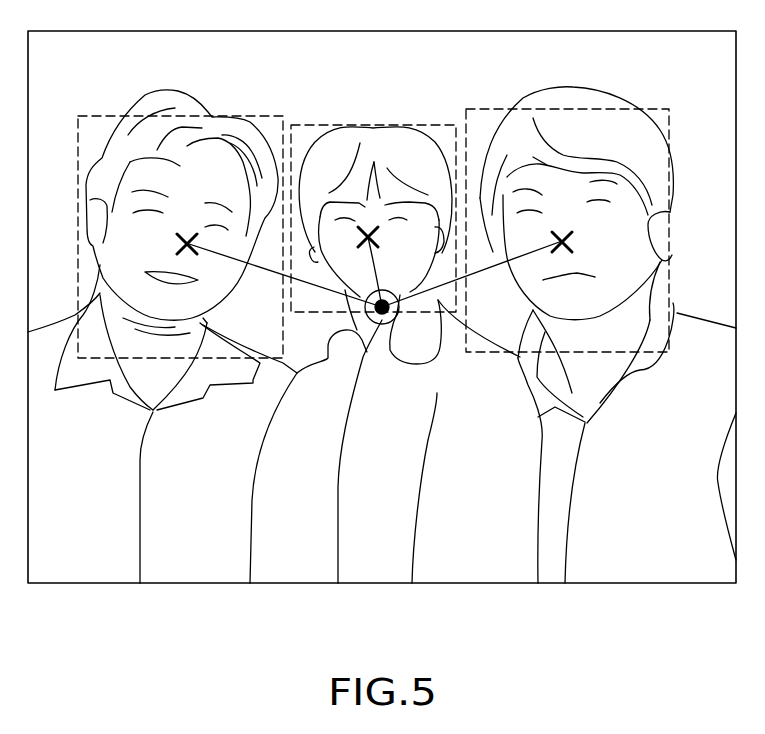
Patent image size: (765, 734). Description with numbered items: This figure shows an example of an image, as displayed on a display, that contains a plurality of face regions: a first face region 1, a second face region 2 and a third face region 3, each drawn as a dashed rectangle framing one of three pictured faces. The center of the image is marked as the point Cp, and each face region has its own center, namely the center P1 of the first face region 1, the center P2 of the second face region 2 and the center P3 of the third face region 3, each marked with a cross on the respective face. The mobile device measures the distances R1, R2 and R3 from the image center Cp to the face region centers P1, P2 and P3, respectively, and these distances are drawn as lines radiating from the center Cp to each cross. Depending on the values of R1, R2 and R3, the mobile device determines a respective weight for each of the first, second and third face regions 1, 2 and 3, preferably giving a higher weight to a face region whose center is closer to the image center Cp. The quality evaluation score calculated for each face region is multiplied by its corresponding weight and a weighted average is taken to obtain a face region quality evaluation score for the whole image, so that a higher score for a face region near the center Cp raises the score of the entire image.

The first face region 1 is at (318, 125).
The second face region 2 is at (98, 116).
The third face region 3 is at (490, 109).
The center of the first face region P1 is at (372, 230).
The center of the second face region P2 is at (190, 226).
The center of the third face region P3 is at (566, 232).
The distance from the center of the image to the center of the first face region R1 is at (340, 258).
The distance from the center of the image to the center of the second face region R2 is at (382, 307).
The distance from the center of the image to the center of the third face region R3 is at (382, 307).
The center of the image Cp is at (377, 323).